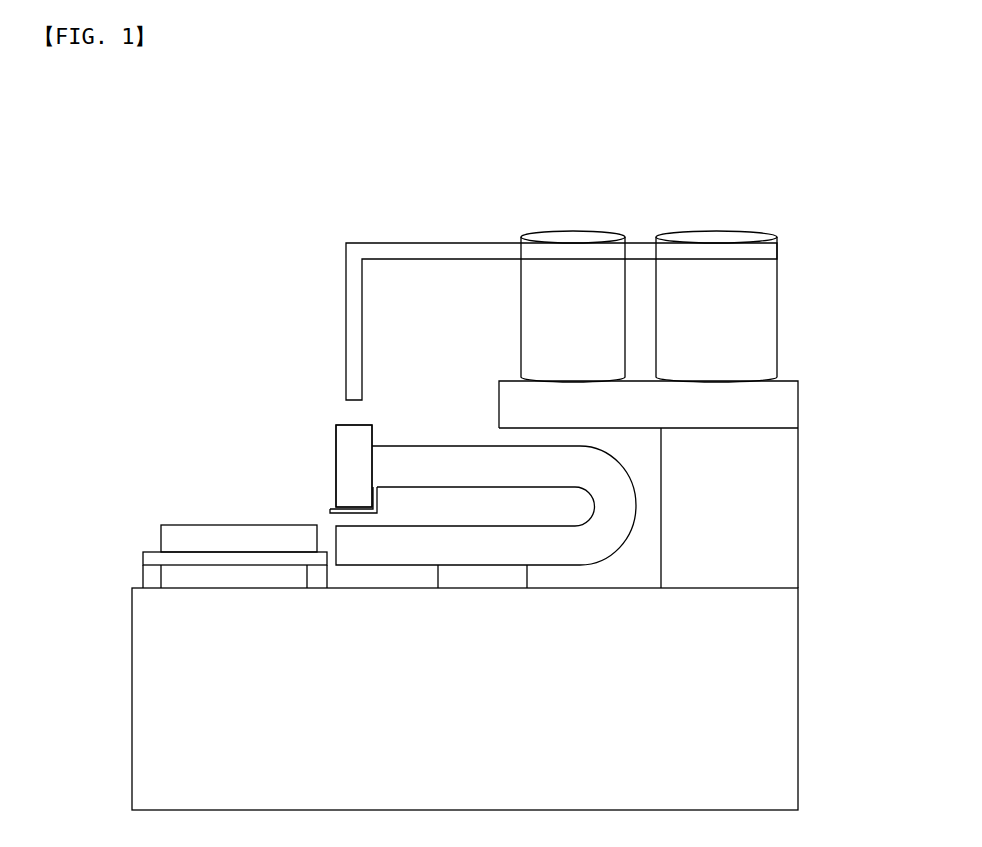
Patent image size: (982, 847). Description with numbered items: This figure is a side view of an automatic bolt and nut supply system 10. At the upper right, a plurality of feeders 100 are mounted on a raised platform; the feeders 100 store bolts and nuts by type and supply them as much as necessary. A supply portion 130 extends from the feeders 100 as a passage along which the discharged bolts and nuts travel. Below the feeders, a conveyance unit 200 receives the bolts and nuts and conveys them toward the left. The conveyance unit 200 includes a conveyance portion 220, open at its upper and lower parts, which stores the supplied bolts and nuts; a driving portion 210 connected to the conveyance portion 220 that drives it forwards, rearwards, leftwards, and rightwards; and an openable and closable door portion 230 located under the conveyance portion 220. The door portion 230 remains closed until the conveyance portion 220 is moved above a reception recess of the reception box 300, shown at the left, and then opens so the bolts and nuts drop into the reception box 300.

The automatic bolt and nut supply system 10 is at (586, 182).
The feeder 100 is at (783, 253).
The supply portion 130 is at (453, 262).
The conveyance unit 200 is at (333, 463).
The driving portion 210 is at (418, 458).
The conveyance portion 220 is at (346, 497).
The door portion 230 is at (379, 508).
The reception box 300 is at (155, 535).